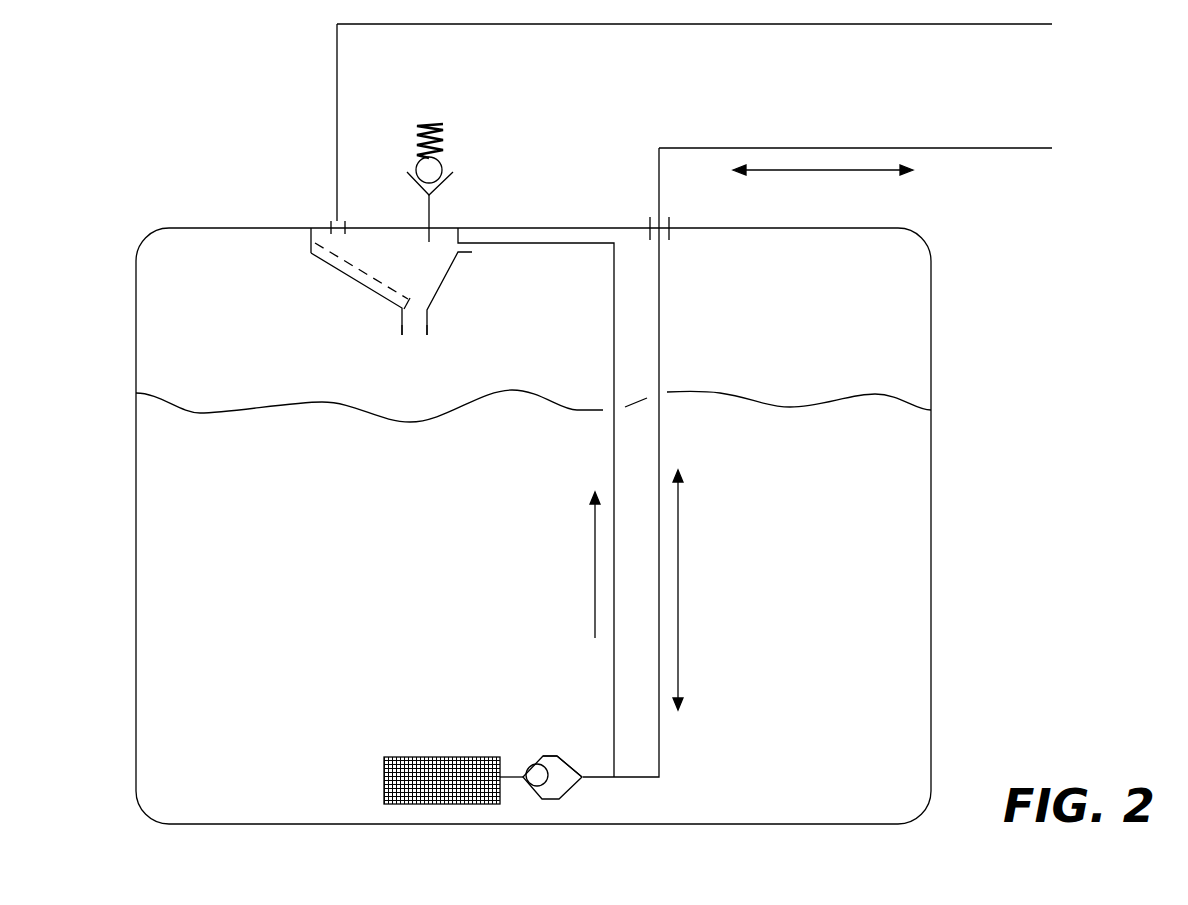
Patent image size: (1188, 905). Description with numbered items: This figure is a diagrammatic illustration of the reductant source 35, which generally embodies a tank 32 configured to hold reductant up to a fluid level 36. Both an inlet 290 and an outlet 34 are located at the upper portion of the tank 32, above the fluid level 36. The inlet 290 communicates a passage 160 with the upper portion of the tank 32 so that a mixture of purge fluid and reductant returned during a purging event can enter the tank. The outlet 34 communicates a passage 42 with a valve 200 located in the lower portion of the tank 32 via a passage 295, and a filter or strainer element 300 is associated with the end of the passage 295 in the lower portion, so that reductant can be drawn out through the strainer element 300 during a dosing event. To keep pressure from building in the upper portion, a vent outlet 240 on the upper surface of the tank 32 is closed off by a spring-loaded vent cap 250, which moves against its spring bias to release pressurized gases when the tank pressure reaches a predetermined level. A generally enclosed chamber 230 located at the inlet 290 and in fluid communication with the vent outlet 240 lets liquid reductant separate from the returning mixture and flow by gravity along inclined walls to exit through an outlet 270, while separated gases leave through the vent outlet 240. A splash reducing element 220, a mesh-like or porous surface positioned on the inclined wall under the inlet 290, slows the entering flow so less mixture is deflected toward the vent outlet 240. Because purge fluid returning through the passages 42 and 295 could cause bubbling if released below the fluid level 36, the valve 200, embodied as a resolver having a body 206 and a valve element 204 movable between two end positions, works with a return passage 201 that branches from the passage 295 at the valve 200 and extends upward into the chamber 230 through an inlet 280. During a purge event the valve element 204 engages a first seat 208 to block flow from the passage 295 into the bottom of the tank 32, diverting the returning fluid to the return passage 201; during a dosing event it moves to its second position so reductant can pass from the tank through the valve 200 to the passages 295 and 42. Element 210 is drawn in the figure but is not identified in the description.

The tank 32 is at (931, 488).
The reductant source 35 is at (100, 195).
The passage 160 is at (625, 24).
The passage 42 is at (998, 148).
The inlet 290 is at (335, 221).
The outlet 34 is at (670, 230).
The spring-loaded vent cap 250 is at (440, 160).
The vent outlet 240 is at (430, 207).
The inlet 280 is at (472, 243).
The return passage 201 is at (612, 443).
The chamber 230 is at (310, 243).
The splash reducing element 220 is at (355, 268).
The outlet 270 is at (413, 325).
The fluid level 36 is at (931, 410).
The passage 295 is at (660, 450).
The strainer element 300 is at (452, 757).
The first seat 208 is at (513, 777).
The valve 200 is at (567, 793).
The body 206 is at (549, 756).
The valve element 204 is at (538, 764).
The motor 210 is at (563, 775).